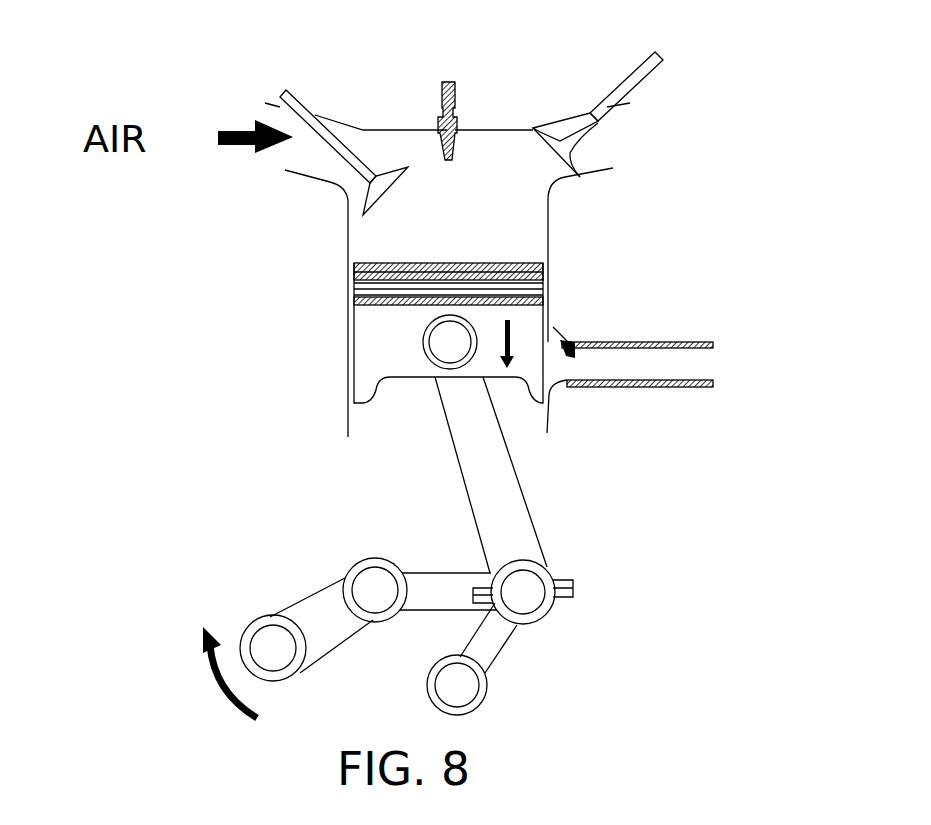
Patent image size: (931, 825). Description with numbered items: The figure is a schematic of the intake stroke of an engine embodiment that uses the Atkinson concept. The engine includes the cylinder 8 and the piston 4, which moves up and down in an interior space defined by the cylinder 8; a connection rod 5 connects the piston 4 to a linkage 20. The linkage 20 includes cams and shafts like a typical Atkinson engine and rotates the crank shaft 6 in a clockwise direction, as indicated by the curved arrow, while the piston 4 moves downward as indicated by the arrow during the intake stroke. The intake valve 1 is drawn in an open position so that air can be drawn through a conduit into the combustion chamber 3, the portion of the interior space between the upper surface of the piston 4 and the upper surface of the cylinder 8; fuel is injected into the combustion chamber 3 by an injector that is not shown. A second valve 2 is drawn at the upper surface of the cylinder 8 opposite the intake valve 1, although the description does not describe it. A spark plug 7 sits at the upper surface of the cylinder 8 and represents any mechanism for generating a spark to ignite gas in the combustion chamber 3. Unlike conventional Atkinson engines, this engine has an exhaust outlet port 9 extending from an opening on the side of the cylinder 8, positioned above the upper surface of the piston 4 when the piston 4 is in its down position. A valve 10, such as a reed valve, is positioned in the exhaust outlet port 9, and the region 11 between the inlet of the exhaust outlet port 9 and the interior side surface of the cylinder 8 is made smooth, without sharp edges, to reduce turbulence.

The intake valve 1 is at (313, 130).
The exhaust valve 2 is at (600, 126).
The combustion chamber 3 is at (407, 200).
The piston 4 is at (385, 338).
The connection rod 5 is at (507, 447).
The crank shaft 6 is at (375, 613).
The spark plug 7 is at (450, 87).
The cylinder 8 is at (348, 325).
The exhaust outlet port 9 is at (680, 342).
The valve 10 is at (568, 360).
The region 11 is at (557, 337).
The linkage 20 is at (527, 618).